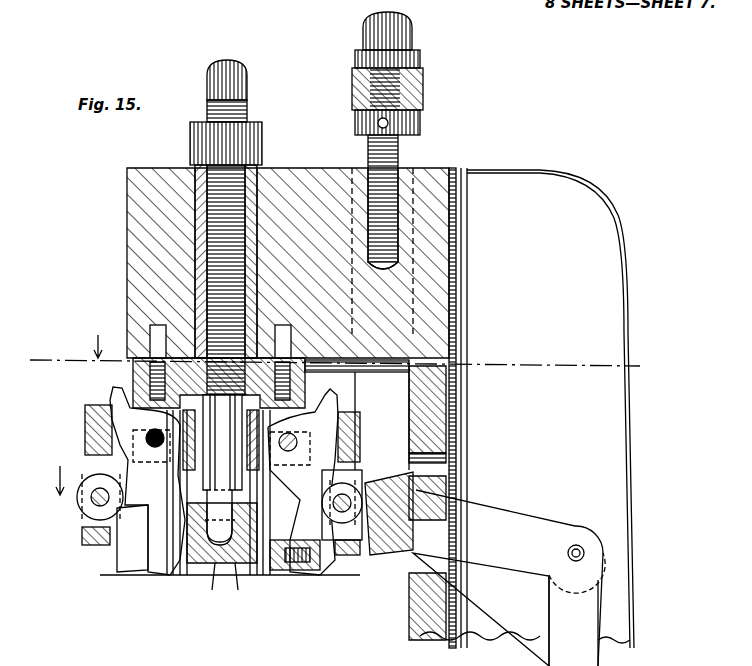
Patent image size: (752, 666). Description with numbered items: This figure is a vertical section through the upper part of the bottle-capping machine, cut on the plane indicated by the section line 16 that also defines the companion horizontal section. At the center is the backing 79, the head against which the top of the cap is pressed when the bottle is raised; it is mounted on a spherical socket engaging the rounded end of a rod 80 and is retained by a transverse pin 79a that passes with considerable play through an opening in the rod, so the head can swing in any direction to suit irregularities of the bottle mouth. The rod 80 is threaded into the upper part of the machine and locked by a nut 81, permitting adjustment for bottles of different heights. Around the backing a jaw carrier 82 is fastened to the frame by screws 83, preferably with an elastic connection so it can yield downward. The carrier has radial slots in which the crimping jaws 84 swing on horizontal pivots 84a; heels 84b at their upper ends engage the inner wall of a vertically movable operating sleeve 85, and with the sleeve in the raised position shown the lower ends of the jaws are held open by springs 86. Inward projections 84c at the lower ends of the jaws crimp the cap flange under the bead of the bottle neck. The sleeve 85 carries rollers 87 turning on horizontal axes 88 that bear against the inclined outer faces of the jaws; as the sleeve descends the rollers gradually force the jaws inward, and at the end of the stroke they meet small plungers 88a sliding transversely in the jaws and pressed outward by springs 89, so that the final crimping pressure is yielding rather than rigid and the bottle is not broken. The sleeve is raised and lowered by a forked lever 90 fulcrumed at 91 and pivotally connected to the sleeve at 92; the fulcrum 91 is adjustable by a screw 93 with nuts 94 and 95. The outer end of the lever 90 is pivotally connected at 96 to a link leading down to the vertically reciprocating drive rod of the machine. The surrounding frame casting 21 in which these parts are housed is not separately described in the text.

The section line 16 is at (347, 415).
The block body 21 is at (127, 235).
The backing 79 is at (230, 585).
The transverse pin 79a is at (195, 525).
The rod 80 is at (218, 580).
The nut 81 is at (262, 138).
The jaw carrier 82 is at (133, 375).
The screws 83 is at (158, 330).
The crimping jaws 84 is at (115, 540).
The horizontal pivots 84a is at (224, 435).
The heels 84b is at (112, 392).
The inward projections 84c is at (197, 580).
The operating sleeve 85 is at (85, 428).
The springs 86 is at (221, 456).
The rollers 87 is at (88, 500).
The horizontal axes 88 is at (82, 530).
The plungers 88a is at (115, 572).
The springs 89 is at (305, 576).
The forked lever 90 is at (508, 578).
The fulcrum 91 is at (413, 519).
The pivotal connection 92 is at (577, 609).
The screw 93 is at (398, 152).
The nut 94 is at (420, 112).
The nut 95 is at (420, 57).
The pivotal connection 96 is at (580, 545).